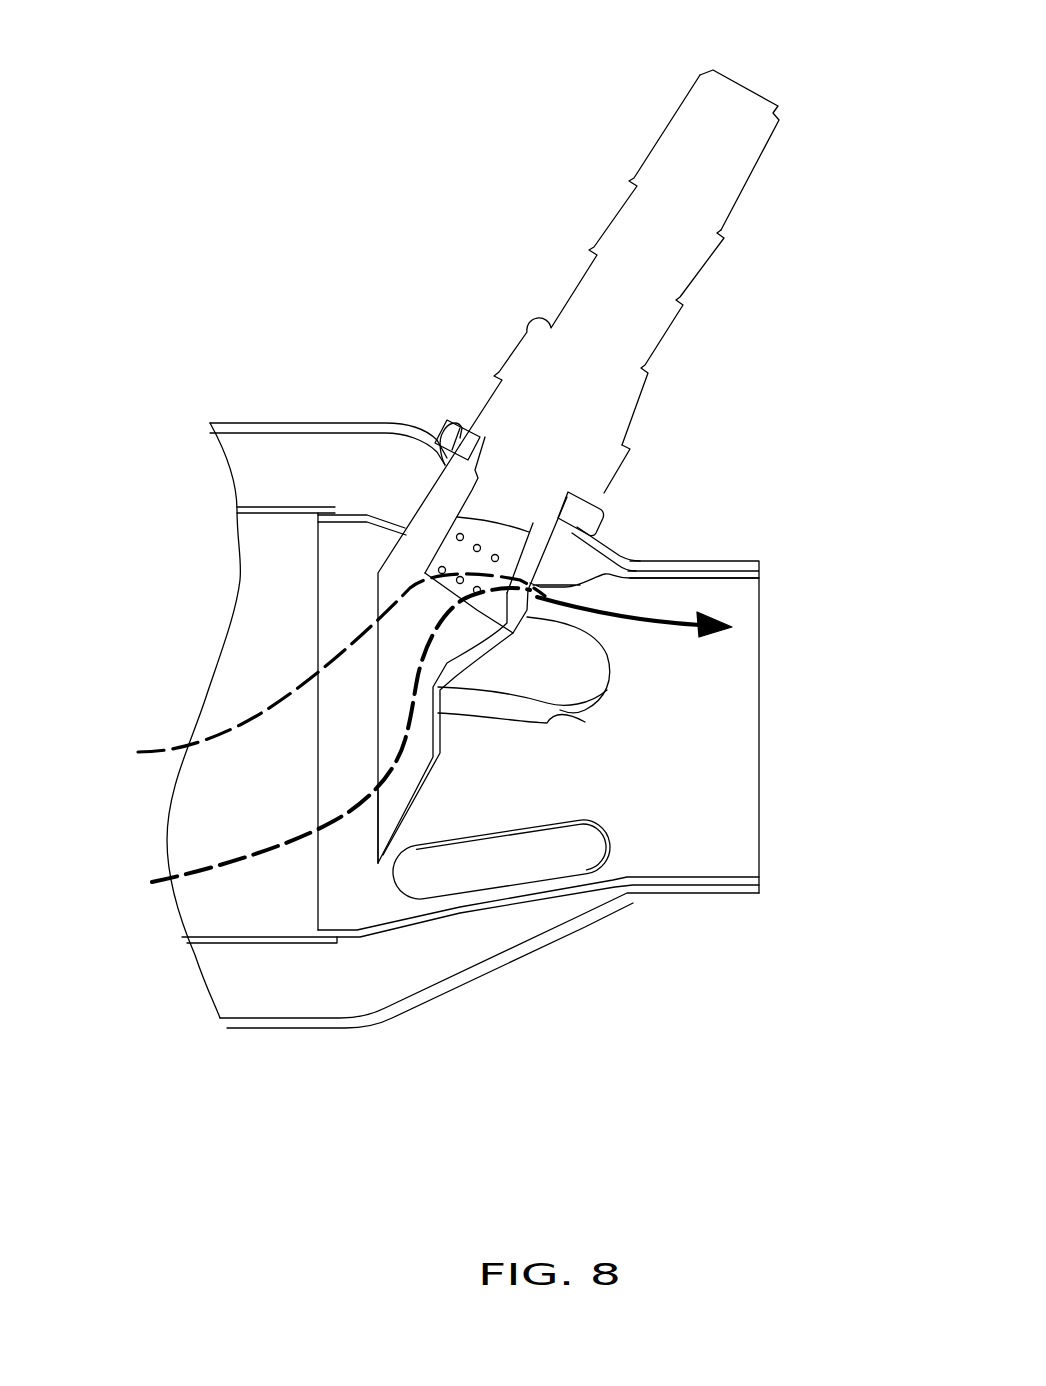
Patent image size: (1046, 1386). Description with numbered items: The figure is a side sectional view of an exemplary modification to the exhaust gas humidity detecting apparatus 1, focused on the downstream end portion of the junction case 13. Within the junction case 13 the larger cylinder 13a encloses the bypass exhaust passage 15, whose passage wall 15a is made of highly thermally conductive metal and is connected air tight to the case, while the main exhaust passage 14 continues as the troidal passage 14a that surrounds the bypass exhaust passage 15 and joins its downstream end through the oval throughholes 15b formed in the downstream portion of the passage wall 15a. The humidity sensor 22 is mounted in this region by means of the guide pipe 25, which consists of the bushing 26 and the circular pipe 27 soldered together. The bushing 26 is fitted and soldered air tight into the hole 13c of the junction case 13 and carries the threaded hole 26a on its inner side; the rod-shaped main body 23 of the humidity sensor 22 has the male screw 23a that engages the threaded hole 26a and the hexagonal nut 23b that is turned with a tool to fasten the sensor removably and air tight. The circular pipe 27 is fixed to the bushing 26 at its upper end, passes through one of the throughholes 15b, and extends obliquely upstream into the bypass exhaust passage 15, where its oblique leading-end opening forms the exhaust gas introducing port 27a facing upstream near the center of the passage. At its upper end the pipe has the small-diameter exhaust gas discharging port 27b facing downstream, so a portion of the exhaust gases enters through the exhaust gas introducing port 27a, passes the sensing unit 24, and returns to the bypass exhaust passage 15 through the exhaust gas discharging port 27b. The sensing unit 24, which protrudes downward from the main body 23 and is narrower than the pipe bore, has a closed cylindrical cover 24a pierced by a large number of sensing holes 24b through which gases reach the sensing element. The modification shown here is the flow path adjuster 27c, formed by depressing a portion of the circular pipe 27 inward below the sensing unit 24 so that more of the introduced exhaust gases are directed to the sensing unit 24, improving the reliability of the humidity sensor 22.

The exhaust gas humidity detecting apparatus 1 is at (397, 60).
The junction case 13 is at (317, 413).
The larger cylinder 13a is at (317, 413).
The hole 13c is at (442, 432).
The main exhaust passage 14 is at (402, 750).
The troidal passage 14a is at (268, 468).
The bypass exhaust passage 15 is at (422, 779).
The passage wall 15a is at (380, 933).
The oval throughholes 15b is at (570, 578).
The humidity sensor 22 is at (757, 80).
The main body 23 is at (658, 400).
The male screw 23a is at (597, 497).
The hexagonal nut 23b is at (630, 447).
The sensing unit 24 is at (412, 480).
The cover 24a is at (412, 480).
The sensing holes 24b is at (481, 545).
The guide pipe 25 is at (381, 799).
The bushing 26 is at (600, 508).
The threaded hole 26a is at (478, 447).
The circular pipe 27 is at (381, 799).
The exhaust gas introducing port 27a is at (378, 818).
The exhaust gas discharging port 27b is at (520, 615).
The flow path adjuster 27c is at (608, 690).